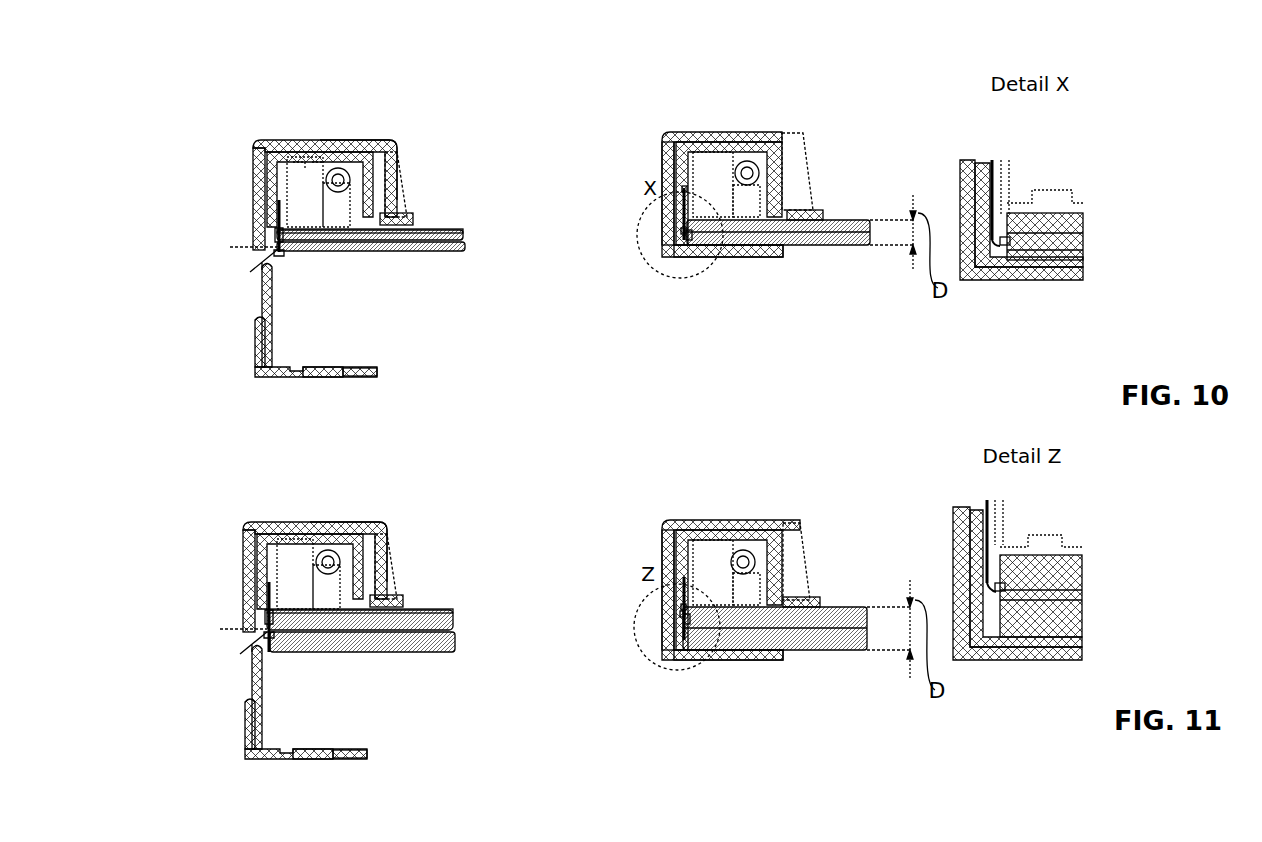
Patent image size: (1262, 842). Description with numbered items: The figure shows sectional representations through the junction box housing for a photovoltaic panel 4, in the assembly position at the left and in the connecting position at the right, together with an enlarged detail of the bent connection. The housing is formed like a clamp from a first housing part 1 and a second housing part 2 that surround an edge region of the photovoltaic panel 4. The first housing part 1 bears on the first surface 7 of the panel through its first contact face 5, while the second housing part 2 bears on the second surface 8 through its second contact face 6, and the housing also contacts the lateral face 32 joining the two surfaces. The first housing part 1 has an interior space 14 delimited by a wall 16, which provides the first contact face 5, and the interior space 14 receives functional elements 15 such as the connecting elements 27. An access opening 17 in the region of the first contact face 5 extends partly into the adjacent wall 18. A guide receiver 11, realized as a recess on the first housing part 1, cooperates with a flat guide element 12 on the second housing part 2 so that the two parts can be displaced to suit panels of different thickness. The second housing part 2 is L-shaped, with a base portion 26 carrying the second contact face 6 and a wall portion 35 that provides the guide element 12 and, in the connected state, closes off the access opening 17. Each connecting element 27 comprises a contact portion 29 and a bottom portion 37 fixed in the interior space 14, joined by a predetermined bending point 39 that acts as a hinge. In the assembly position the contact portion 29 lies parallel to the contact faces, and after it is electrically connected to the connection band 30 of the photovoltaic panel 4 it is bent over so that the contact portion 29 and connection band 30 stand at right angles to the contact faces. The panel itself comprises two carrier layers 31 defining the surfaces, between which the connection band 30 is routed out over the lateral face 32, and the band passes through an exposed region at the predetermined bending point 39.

In FIG. 10, the first housing part 1 is at (350, 150).
In FIG. 11, the first housing part 1 is at (340, 532).
In FIG. 10, the second housing part 2 is at (350, 377).
In FIG. 11, the second housing part 2 is at (340, 759).
In FIG. 10, the photovoltaic panel 4 is at (452, 238).
In FIG. 11, the photovoltaic panel 4 is at (383, 608).
In FIG. 10, the first contact face 5 is at (368, 228).
In FIG. 11, the first contact face 5 is at (396, 571).
In FIG. 10, the second contact face 6 is at (327, 377).
In FIG. 11, the second contact face 6 is at (313, 788).
In FIG. 10, the first surface 7 is at (428, 230).
In FIG. 11, the first surface 7 is at (379, 572).
In FIG. 10, the second surface 8 is at (437, 252).
In FIG. 11, the second surface 8 is at (374, 665).
In FIG. 10, the guide receiver 11 is at (258, 167).
In FIG. 11, the guide receiver 11 is at (407, 574).
In FIG. 10, the guide element 12 is at (262, 290).
In FIG. 11, the guide element 12 is at (201, 698).
In FIG. 10, the interior space 14 is at (293, 177).
In FIG. 11, the interior space 14 is at (283, 559).
In FIG. 10, the functional elements 15 is at (308, 188).
In FIG. 11, the functional elements 15 is at (321, 508).
In FIG. 10, the wall 16 is at (363, 177).
In FIG. 11, the wall 16 is at (398, 540).
In FIG. 10, the access opening 17 is at (258, 218).
In FIG. 11, the access opening 17 is at (258, 571).
In FIG. 10, the wall adjacent to the first contact face 18 is at (253, 146).
In FIG. 11, the wall adjacent to the first contact face 18 is at (285, 528).
In FIG. 10, the base portion 26 is at (285, 377).
In FIG. 11, the base portion 26 is at (300, 793).
In FIG. 10, the connecting element 27 is at (277, 233).
In FIG. 11, the connecting element 27 is at (319, 651).
In FIG. 10, the contact portion 29 is at (277, 250).
In FIG. 11, the contact portion 29 is at (200, 617).
In FIG. 10, the connection band 30 is at (263, 277).
In FIG. 11, the connection band 30 is at (683, 607).
In FIG. 10, the carrier layers 31 is at (848, 227).
In FIG. 11, the carrier layers 31 is at (847, 617).
In FIG. 10, the lateral face 32 is at (688, 236).
In FIG. 11, the lateral face 32 is at (686, 617).
In FIG. 10, the wall portion 35 is at (255, 343).
In FIG. 11, the wall portion 35 is at (192, 724).
In FIG. 10, the bottom portion 37 is at (280, 203).
In FIG. 11, the bottom portion 37 is at (270, 585).
In FIG. 10, the predetermined bending point 39 is at (277, 253).
In FIG. 11, the predetermined bending point 39 is at (267, 635).